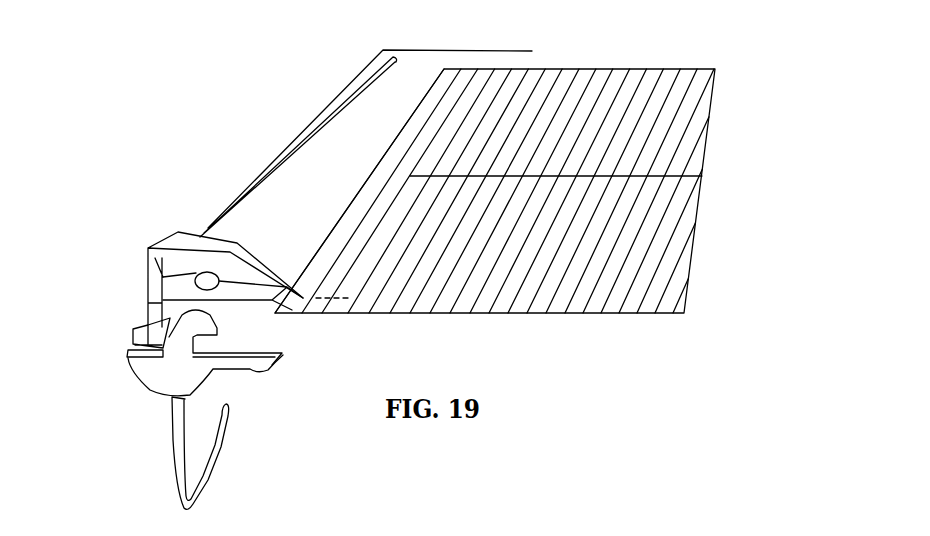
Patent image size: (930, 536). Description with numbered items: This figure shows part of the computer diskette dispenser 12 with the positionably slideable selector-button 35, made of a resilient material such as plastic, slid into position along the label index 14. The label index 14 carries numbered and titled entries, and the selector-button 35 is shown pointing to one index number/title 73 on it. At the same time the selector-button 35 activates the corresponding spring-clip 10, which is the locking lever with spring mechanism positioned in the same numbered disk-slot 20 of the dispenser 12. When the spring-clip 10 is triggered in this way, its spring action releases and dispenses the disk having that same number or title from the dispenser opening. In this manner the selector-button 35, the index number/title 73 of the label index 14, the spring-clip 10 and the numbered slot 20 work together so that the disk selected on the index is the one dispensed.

The spring-clip 10 is at (143, 387).
The computer diskette dispenser 12 is at (733, 535).
The label index 14 is at (572, 136).
The numbered slot 20 is at (718, 252).
The selector-button 35 is at (172, 233).
The index number/title 73 is at (332, 300).